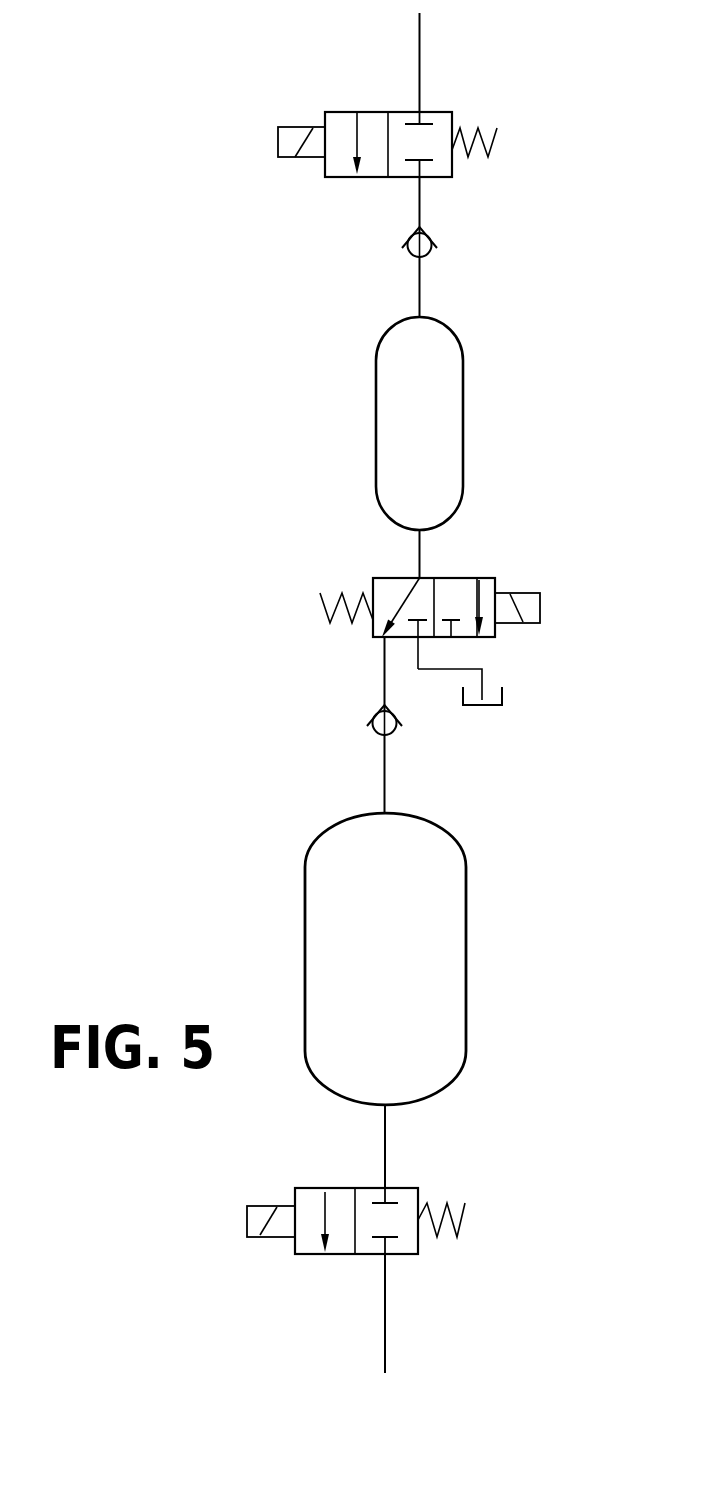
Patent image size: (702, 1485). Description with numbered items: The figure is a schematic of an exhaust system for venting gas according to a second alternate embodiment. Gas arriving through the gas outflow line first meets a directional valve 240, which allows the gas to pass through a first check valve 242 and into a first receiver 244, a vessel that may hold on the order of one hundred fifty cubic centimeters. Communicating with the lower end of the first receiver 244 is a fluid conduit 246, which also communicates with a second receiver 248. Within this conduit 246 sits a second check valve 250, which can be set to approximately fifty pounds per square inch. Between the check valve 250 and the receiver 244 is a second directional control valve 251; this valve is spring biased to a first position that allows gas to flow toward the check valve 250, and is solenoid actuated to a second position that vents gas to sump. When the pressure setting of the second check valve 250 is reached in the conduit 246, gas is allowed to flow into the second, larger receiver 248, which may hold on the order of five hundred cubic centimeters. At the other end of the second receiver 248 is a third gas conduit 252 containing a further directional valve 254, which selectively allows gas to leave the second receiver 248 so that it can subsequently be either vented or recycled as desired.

The directional valve 240 is at (373, 177).
The first check valve 242 is at (423, 243).
The first receiver 244 is at (432, 410).
The fluid conduit 246 is at (420, 553).
The second directional control valve 251 is at (373, 637).
The second check valve 250 is at (387, 723).
The second receiver 248 is at (466, 918).
The third gas conduit 252 is at (387, 1140).
The directional valve 254 is at (355, 1254).